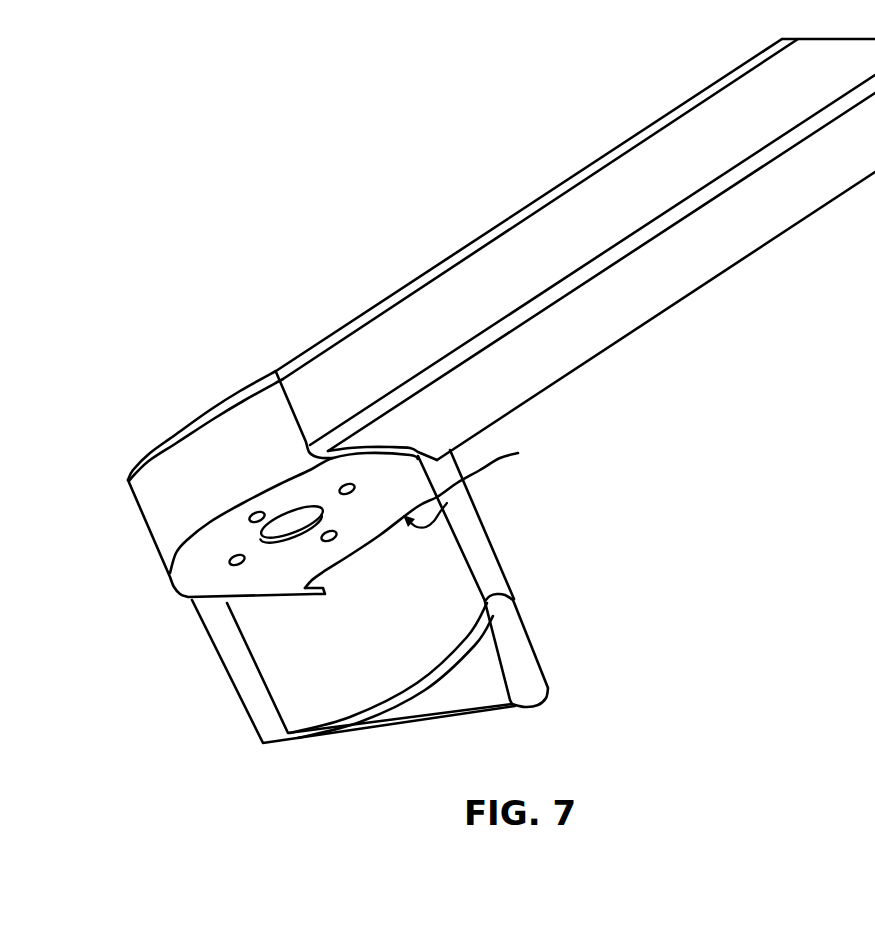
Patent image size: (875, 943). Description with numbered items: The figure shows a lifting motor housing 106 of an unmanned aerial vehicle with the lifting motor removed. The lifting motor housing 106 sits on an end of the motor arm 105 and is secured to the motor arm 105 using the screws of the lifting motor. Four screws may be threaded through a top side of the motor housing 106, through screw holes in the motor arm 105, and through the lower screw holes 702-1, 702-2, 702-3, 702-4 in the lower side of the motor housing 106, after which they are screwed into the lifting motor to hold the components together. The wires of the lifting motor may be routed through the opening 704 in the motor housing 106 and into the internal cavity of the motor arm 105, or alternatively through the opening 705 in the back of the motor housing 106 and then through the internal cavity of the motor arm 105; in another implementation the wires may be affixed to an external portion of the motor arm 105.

The motor arm 105 is at (665, 138).
The lifting motor housing 106 is at (497, 577).
The lower screw hole 702-1 is at (232, 559).
The lower screw hole 702-2 is at (256, 512).
The lower screw hole 702-3 is at (336, 534).
The lower screw hole 702-4 is at (345, 485).
The opening 704 is at (298, 512).
The opening 705 is at (447, 503).